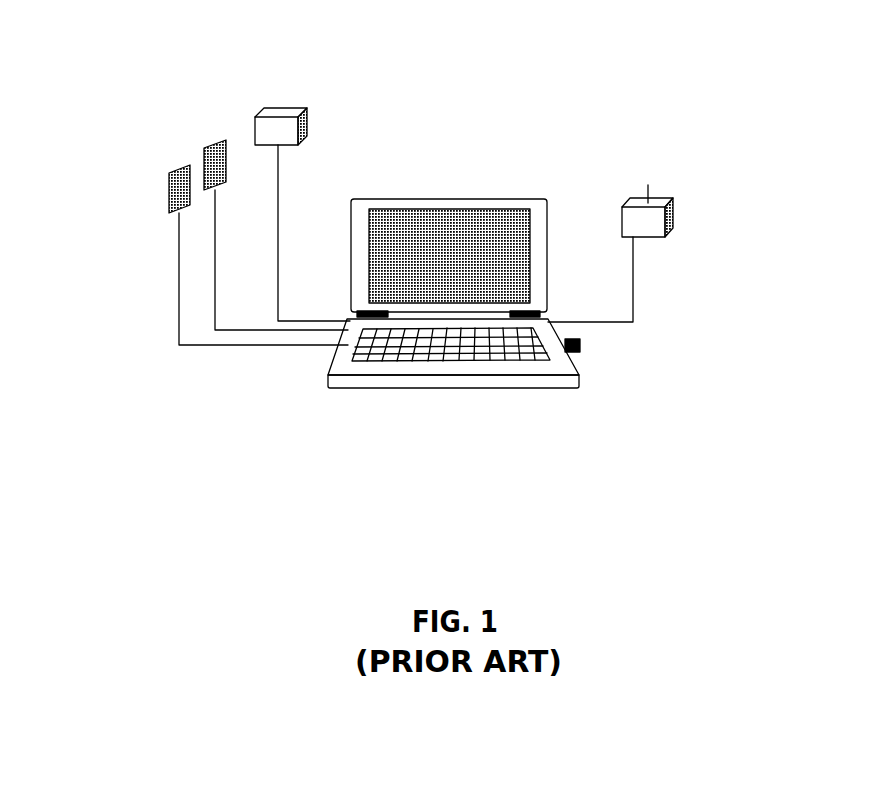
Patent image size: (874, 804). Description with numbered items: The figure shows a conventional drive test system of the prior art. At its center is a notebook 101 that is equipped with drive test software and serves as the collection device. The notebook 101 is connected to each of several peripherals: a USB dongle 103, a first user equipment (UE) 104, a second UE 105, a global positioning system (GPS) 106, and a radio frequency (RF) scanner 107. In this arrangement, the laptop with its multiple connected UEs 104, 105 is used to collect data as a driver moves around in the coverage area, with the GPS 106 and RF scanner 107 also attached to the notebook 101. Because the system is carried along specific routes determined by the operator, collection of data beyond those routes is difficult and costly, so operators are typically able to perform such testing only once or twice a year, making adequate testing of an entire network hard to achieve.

The notebook 101 is at (465, 196).
The USB dongle 103 is at (582, 352).
The first user equipment (UE) 104 is at (215, 140).
The second UE 105 is at (180, 167).
The global positioning system (GPS) 106 is at (278, 102).
The radio frequency (RF) scanner 107 is at (665, 238).